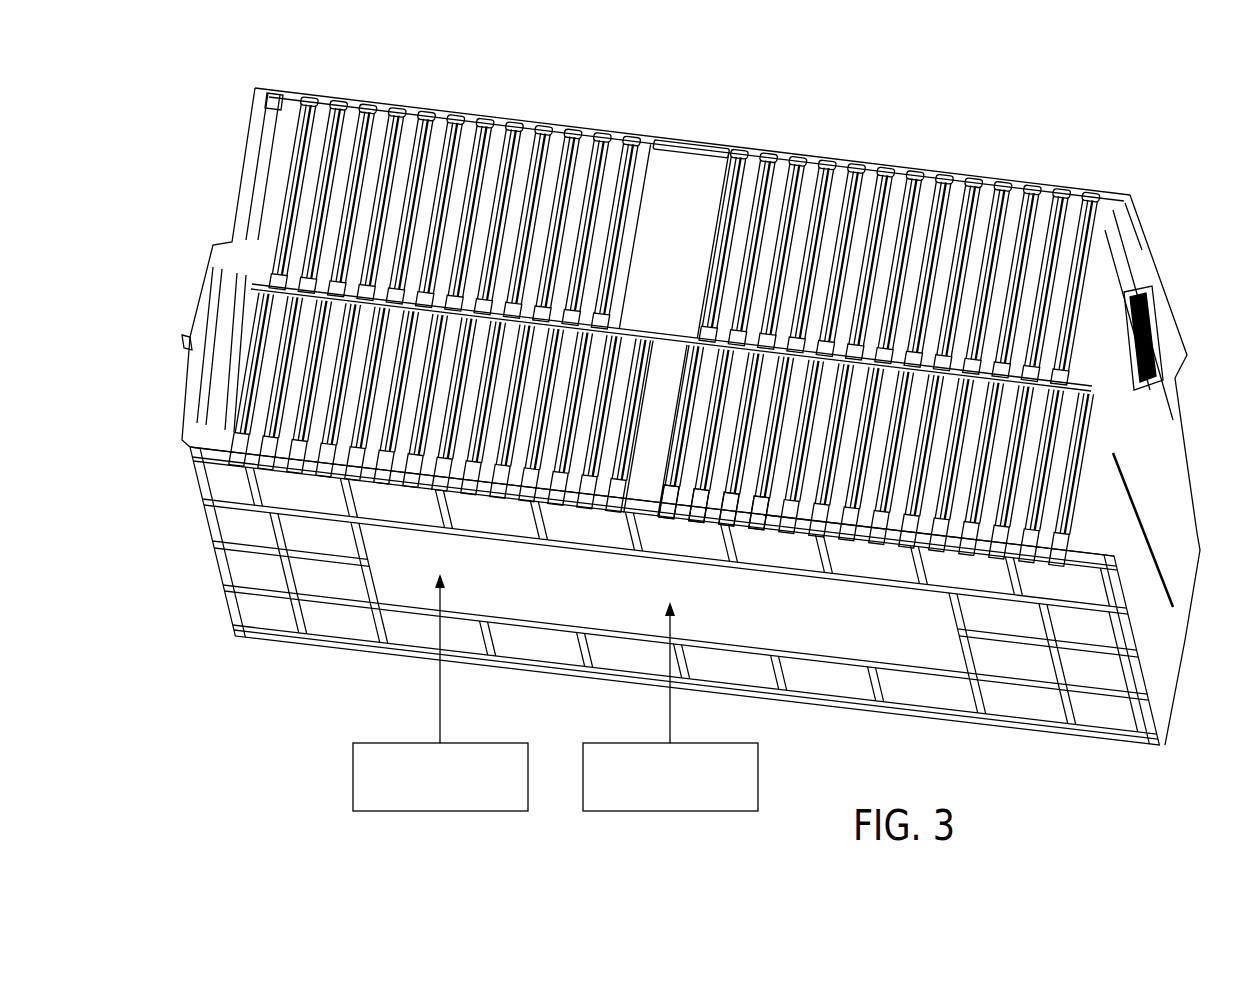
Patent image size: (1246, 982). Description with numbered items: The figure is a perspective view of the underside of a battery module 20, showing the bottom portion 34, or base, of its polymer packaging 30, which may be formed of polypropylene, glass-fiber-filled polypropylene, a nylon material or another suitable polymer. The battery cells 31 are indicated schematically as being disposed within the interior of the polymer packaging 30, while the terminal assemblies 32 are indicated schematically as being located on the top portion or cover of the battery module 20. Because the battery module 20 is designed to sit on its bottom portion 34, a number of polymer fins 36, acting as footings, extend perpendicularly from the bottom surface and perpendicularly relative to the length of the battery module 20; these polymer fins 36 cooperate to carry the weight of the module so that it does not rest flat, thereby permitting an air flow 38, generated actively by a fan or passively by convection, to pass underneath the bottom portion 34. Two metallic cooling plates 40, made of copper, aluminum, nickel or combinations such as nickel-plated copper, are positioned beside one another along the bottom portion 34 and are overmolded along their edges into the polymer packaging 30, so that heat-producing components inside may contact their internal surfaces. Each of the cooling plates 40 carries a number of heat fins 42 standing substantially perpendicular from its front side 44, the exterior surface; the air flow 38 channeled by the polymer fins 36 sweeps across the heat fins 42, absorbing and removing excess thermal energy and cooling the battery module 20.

The battery module 20 is at (795, 82).
The polymer packaging 30 is at (1097, 268).
The battery cells 31 is at (668, 812).
The terminal assemblies 32 is at (440, 812).
The bottom portion 34 is at (690, 185).
The polymer fins 36 is at (940, 173).
The air flow 38 is at (555, 152).
The metallic cooling plates 40 is at (270, 350).
The heat fins 42 is at (815, 500).
The front side 44 is at (838, 460).